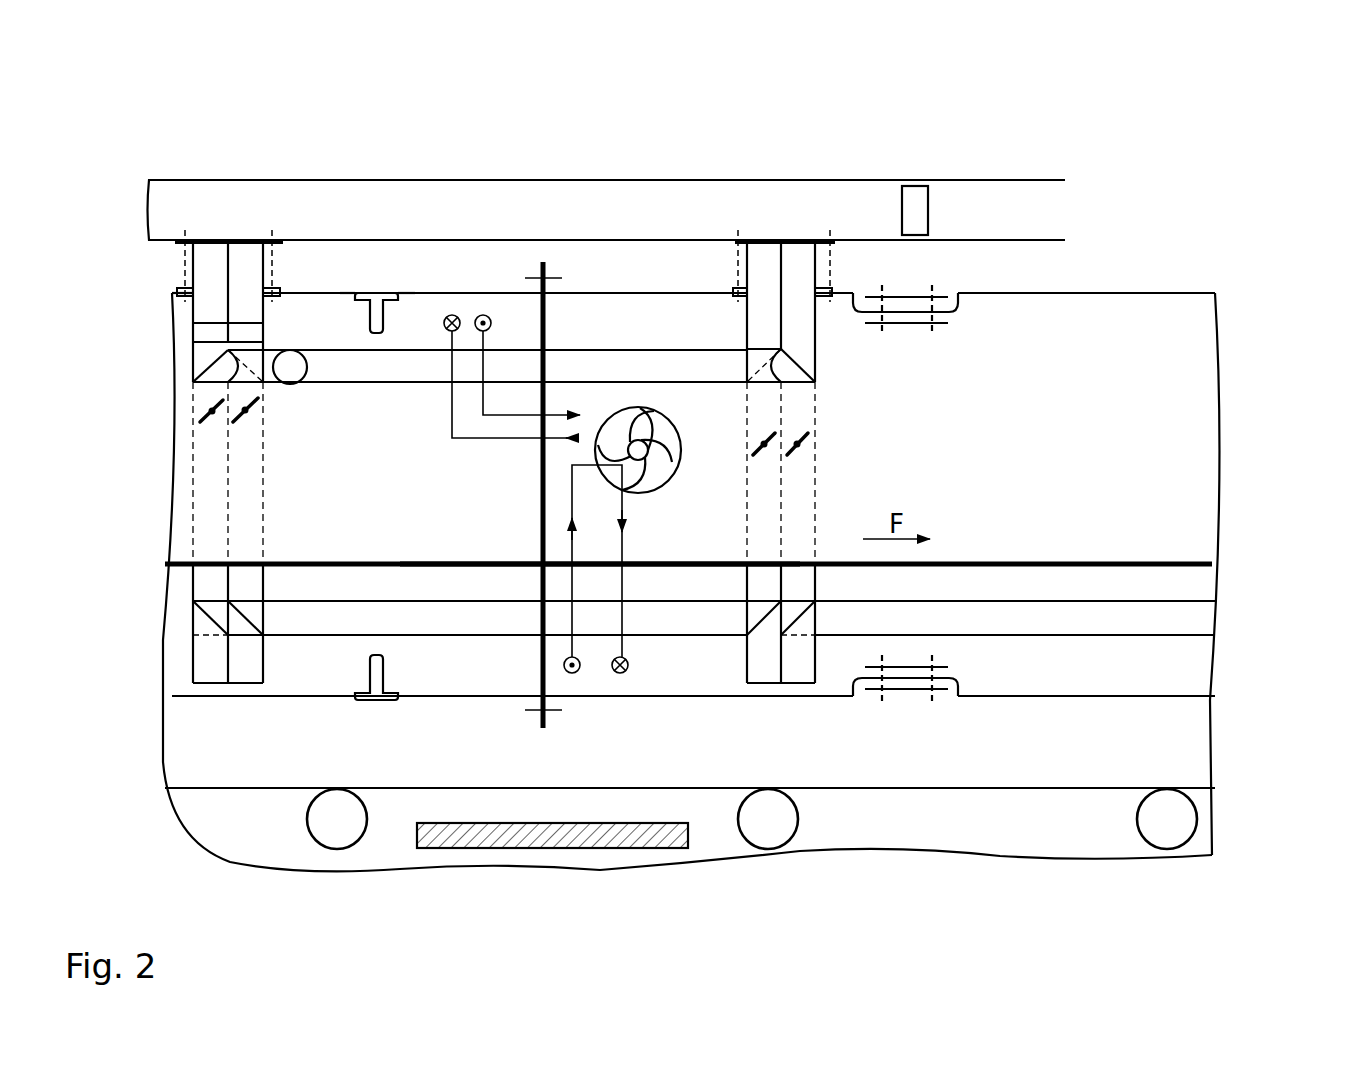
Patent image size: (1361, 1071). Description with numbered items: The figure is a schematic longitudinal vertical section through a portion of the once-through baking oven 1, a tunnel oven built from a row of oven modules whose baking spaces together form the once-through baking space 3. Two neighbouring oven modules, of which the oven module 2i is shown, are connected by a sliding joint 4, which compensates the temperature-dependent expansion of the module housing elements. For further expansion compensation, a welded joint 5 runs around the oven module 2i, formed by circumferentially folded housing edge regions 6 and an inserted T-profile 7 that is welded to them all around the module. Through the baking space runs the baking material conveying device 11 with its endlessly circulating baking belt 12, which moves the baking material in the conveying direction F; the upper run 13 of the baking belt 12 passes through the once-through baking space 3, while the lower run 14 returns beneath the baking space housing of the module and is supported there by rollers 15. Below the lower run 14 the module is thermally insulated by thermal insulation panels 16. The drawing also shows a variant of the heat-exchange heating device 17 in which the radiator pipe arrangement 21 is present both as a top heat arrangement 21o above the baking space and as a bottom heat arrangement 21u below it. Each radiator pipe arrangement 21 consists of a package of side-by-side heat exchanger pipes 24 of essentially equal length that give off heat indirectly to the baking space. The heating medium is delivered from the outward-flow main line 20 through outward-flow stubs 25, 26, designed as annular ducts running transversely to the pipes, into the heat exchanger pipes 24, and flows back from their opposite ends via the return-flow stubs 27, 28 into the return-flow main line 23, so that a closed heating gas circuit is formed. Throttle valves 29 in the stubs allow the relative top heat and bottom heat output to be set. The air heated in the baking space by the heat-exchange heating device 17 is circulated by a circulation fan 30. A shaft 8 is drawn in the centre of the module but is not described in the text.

The once-through baking oven 1 is at (819, 154).
The oven module 2i is at (641, 286).
The once-through baking space 3 is at (436, 493).
The sliding joint 4 is at (910, 286).
The welded joint 5 is at (389, 280).
The folded housing edge regions 6 is at (338, 298).
The T-profile 7 is at (374, 290).
The shaft 8 is at (540, 726).
The baking material conveying device 11 is at (1153, 557).
The baking belt 12 is at (1133, 567).
The upper run 13 is at (860, 589).
The lower run 14 is at (860, 802).
The rollers 15 is at (337, 832).
The thermal insulation panels 16 is at (575, 838).
The heat-exchange heating device 17 is at (873, 177).
The outward-flow main line 20 is at (757, 192).
The radiator pipe arrangement 21 is at (312, 644).
The top heat arrangement 21o is at (325, 388).
The bottom heat arrangement 21u is at (324, 597).
The return-flow main line 23 is at (504, 177).
The heat exchanger pipes 24 is at (506, 348).
The outward-flow stub 25 is at (767, 672).
The outward-flow stub 26 is at (213, 672).
The return-flow stub 27 is at (802, 672).
The return-flow stub 28 is at (250, 672).
The throttle valves 29 is at (248, 404).
The circulation fan 30 is at (636, 443).